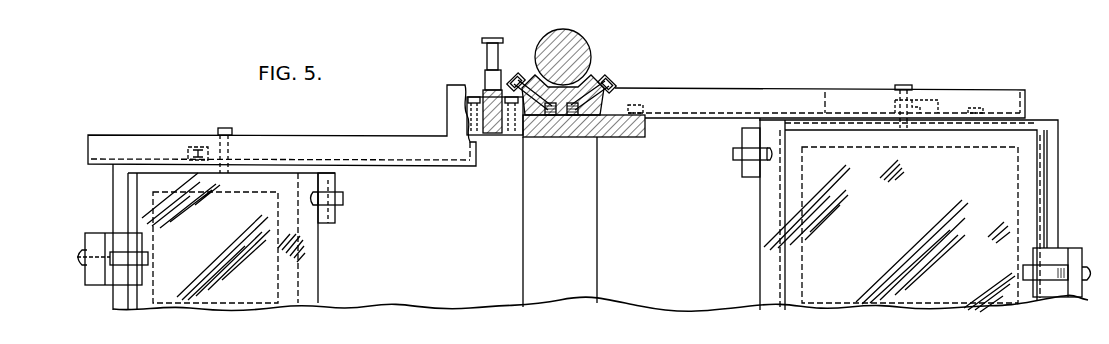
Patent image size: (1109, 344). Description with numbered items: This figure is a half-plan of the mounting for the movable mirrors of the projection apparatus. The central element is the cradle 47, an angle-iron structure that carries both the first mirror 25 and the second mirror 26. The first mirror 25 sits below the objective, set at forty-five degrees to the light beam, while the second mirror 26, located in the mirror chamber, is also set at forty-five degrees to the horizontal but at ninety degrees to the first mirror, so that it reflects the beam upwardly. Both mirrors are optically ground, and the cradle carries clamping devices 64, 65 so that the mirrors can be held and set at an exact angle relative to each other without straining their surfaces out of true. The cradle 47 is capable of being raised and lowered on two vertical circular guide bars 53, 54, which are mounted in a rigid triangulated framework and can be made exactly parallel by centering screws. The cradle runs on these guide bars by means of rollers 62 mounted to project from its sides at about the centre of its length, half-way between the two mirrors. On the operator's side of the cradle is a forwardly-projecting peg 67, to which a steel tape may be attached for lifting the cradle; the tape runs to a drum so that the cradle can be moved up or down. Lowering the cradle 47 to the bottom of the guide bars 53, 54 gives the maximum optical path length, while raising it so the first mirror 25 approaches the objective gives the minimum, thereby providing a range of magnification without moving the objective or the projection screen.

The cradle 47 is at (418, 160).
The forwardly-projecting peg 67 is at (483, 39).
The rollers 62 is at (531, 73).
The vertical circular guide bar 53 is at (578, 47).
The clamping device 65 is at (751, 135).
The clamping device 64 is at (124, 245).
The first mirror 25 is at (205, 296).
The second mirror 26 is at (886, 302).
The vertical circular guide bar 54 is at (577, 240).